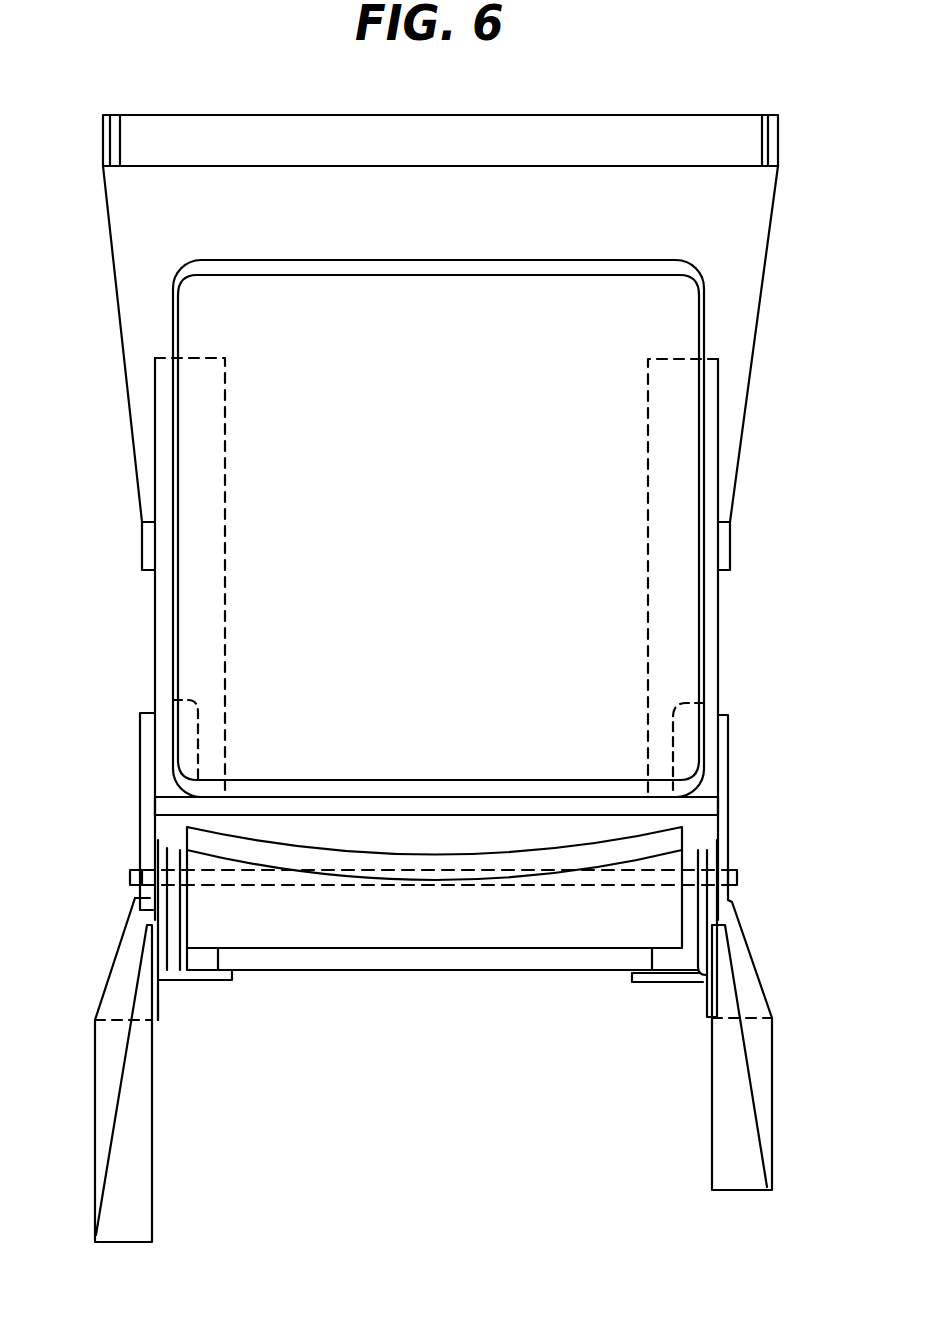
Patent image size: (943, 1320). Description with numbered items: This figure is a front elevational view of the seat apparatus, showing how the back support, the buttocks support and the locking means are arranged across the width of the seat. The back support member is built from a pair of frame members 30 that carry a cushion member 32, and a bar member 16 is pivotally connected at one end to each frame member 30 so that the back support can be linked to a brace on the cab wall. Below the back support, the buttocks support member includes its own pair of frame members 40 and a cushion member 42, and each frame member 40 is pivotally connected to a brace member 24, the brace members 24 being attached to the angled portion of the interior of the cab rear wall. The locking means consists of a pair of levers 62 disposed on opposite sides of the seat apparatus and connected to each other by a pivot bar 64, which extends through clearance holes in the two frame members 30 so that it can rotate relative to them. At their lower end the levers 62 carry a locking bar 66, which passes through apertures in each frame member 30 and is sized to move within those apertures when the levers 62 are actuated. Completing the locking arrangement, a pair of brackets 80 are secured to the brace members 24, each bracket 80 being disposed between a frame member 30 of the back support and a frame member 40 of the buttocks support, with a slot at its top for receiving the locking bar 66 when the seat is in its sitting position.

The bar member 16 is at (767, 258).
The cushion member 32 is at (668, 328).
The frame members 30 is at (190, 608).
The levers 62 is at (185, 722).
The pivot bar 64 is at (703, 806).
The cushion member 42 is at (372, 930).
The locking bar 66 is at (737, 878).
The frame members 40 is at (200, 983).
The brace member 24 is at (105, 1050).
The brackets 80 is at (160, 1003).